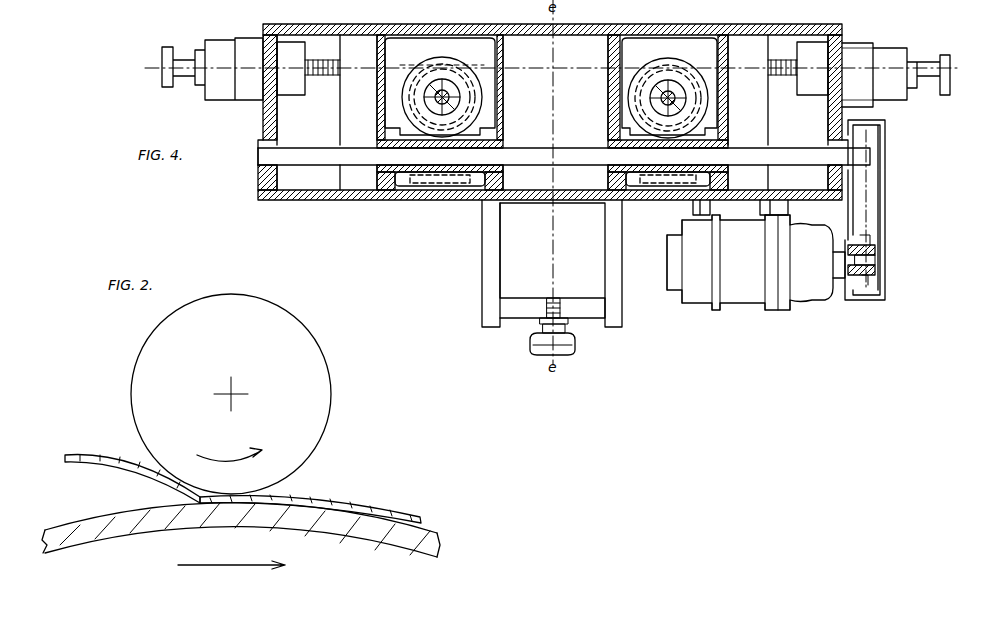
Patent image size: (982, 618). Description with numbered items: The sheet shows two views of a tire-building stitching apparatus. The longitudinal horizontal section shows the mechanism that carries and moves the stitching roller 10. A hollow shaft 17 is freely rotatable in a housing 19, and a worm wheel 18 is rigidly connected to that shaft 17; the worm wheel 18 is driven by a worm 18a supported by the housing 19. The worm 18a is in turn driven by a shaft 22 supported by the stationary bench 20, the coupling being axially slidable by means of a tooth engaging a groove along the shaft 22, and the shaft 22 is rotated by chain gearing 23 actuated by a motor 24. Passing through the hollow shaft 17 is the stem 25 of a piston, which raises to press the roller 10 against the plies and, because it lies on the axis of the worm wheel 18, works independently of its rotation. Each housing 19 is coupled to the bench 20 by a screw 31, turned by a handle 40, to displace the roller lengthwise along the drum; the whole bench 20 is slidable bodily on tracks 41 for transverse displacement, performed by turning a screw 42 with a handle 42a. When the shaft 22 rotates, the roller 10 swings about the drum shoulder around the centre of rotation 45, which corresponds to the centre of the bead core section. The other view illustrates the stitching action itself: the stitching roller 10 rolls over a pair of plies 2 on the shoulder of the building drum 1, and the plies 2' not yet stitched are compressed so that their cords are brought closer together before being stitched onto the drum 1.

In FIG. 2, the building drum 1 is at (275, 520).
In FIG. 2, the plies 2 is at (310, 503).
In FIG. 2, the plies not yet stitched 2' is at (132, 465).
In FIG. 2, the stitching roller 10 is at (313, 402).
In FIG. 4, the shaft 17 is at (432, 88).
In FIG. 4, the worm wheel 18 is at (484, 98).
In FIG. 4, the worm 18a is at (440, 180).
In FIG. 4, the housing 19 is at (698, 36).
In FIG. 4, the bench 20 is at (503, 26).
In FIG. 4, the shaft 22 is at (572, 150).
In FIG. 4, the chain gearing 23 is at (868, 225).
In FIG. 4, the motor 24 is at (745, 292).
In FIG. 4, the stem 25 is at (448, 90).
In FIG. 4, the screw 31 is at (323, 74).
In FIG. 4, the handle 40 is at (165, 62).
In FIG. 4, the tracks 41 is at (490, 279).
In FIG. 4, the screw 42 is at (560, 308).
In FIG. 4, the handle 42a is at (570, 349).
In FIG. 4, the centre of rotation 45 is at (420, 104).